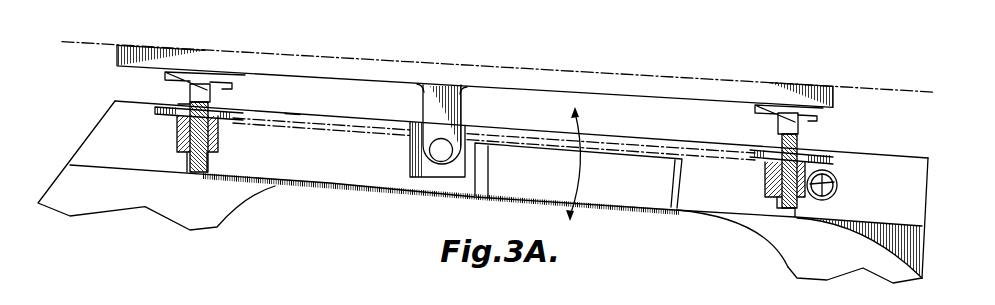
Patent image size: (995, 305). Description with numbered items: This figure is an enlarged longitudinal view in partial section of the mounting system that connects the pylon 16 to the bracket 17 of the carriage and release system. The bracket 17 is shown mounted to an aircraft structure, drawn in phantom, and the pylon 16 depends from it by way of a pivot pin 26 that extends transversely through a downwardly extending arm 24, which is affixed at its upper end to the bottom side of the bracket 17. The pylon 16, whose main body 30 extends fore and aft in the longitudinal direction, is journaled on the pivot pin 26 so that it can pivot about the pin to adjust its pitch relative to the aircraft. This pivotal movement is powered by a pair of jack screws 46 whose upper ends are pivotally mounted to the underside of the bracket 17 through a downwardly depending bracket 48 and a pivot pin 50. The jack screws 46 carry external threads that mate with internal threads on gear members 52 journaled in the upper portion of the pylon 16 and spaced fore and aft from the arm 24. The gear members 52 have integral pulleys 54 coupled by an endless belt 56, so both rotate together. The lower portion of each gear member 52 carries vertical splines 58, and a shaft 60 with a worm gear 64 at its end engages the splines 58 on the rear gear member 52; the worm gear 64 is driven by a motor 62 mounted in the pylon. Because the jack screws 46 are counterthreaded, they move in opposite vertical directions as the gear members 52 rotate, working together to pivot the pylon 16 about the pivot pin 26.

The pylon 16 is at (717, 246).
The bracket 17 is at (674, 80).
The arm 24 is at (462, 103).
The pivot pin 26 is at (440, 158).
The main body 30 is at (363, 163).
The jack screws 46 is at (193, 172).
The downwardly depending bracket 48 is at (187, 78).
The pivot pin 50 is at (200, 87).
The gear members 52 is at (217, 133).
The pulleys 54 is at (175, 106).
The endless belt 56 is at (293, 113).
The splines 58 is at (177, 127).
The shaft 60 is at (820, 183).
The motor 62 is at (822, 205).
The worm gear 64 is at (830, 200).